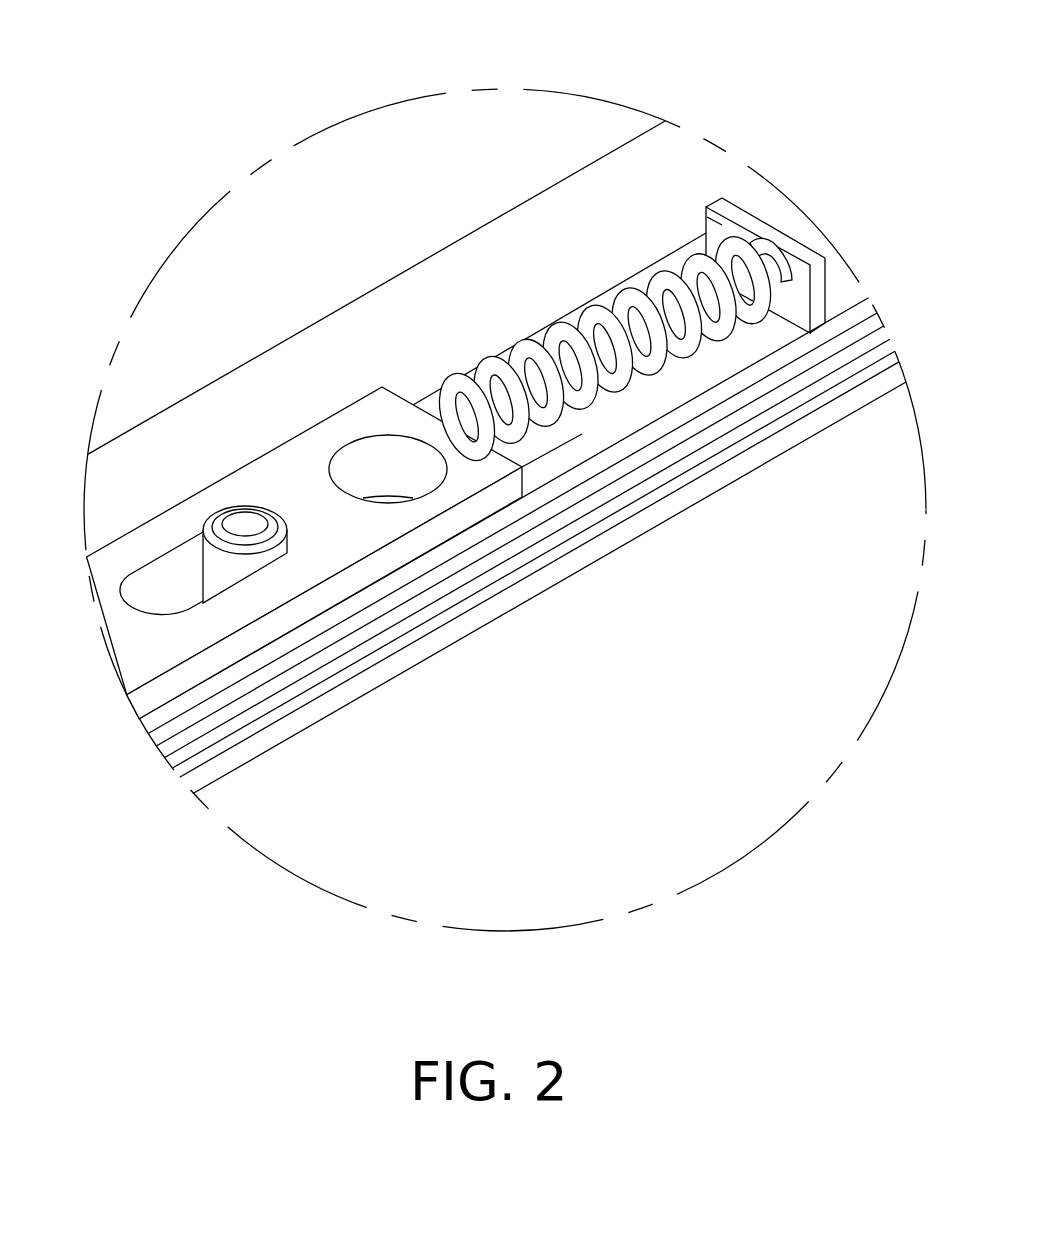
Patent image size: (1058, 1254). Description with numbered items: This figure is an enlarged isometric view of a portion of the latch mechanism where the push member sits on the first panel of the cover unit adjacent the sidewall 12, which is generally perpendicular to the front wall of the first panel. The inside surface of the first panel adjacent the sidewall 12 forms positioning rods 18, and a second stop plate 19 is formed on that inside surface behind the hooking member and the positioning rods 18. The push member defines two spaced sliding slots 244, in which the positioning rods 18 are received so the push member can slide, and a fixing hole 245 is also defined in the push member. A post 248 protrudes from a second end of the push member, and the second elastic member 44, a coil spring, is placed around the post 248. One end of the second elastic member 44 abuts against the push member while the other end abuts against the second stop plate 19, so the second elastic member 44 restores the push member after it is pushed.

The sidewall 12 is at (517, 590).
The positioning rod 18 is at (245, 520).
The second stop plate 19 is at (722, 228).
The second elastic member 44 is at (643, 303).
The sliding slot 244 is at (177, 587).
The fixing hole 245 is at (382, 458).
The post 248 is at (537, 393).